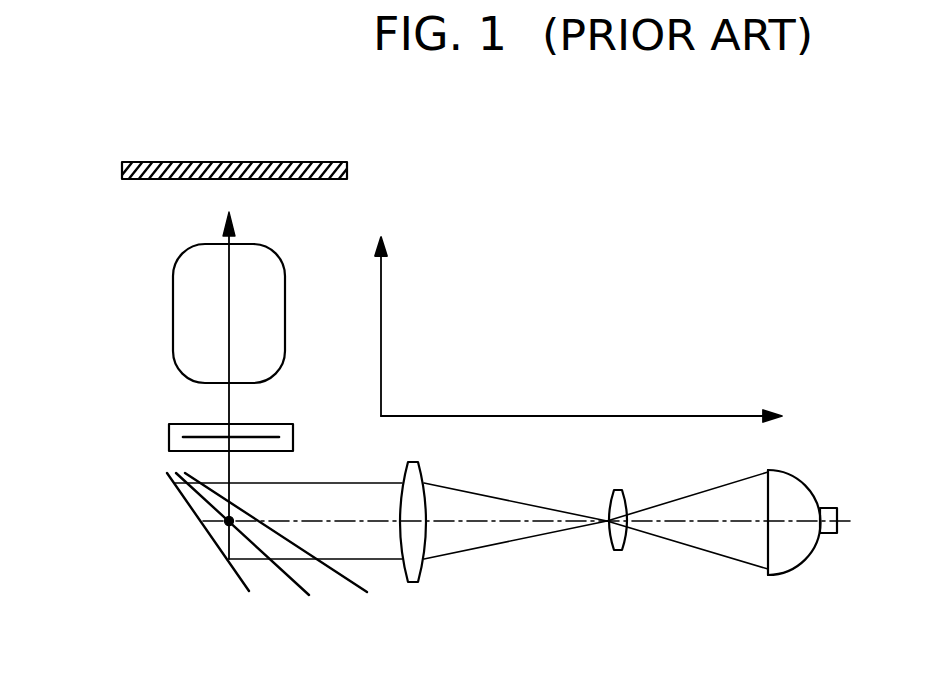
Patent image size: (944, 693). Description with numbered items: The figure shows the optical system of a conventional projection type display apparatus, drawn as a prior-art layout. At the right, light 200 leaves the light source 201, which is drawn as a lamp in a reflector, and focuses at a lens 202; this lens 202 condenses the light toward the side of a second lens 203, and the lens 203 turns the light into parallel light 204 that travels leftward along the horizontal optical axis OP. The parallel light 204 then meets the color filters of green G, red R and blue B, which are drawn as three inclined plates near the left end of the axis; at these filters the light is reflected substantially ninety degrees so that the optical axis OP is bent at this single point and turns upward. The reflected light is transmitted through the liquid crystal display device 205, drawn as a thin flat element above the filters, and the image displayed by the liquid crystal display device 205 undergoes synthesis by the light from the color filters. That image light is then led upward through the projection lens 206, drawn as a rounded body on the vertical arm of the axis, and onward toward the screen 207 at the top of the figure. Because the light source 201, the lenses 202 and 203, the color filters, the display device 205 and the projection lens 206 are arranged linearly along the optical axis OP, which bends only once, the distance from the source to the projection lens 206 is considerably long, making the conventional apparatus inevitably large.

The light source 200 is at (793, 547).
The light source 201 is at (712, 530).
The lens 202 is at (620, 492).
The lens 203 is at (425, 480).
The parallel light 204 is at (365, 538).
The liquid crystal display device 205 is at (169, 432).
The projection lens 206 is at (173, 307).
The screen 207 is at (122, 165).
The green color filter G is at (183, 498).
The red color filter R is at (295, 583).
The blue color filter B is at (340, 580).
The optical axis OP is at (500, 523).